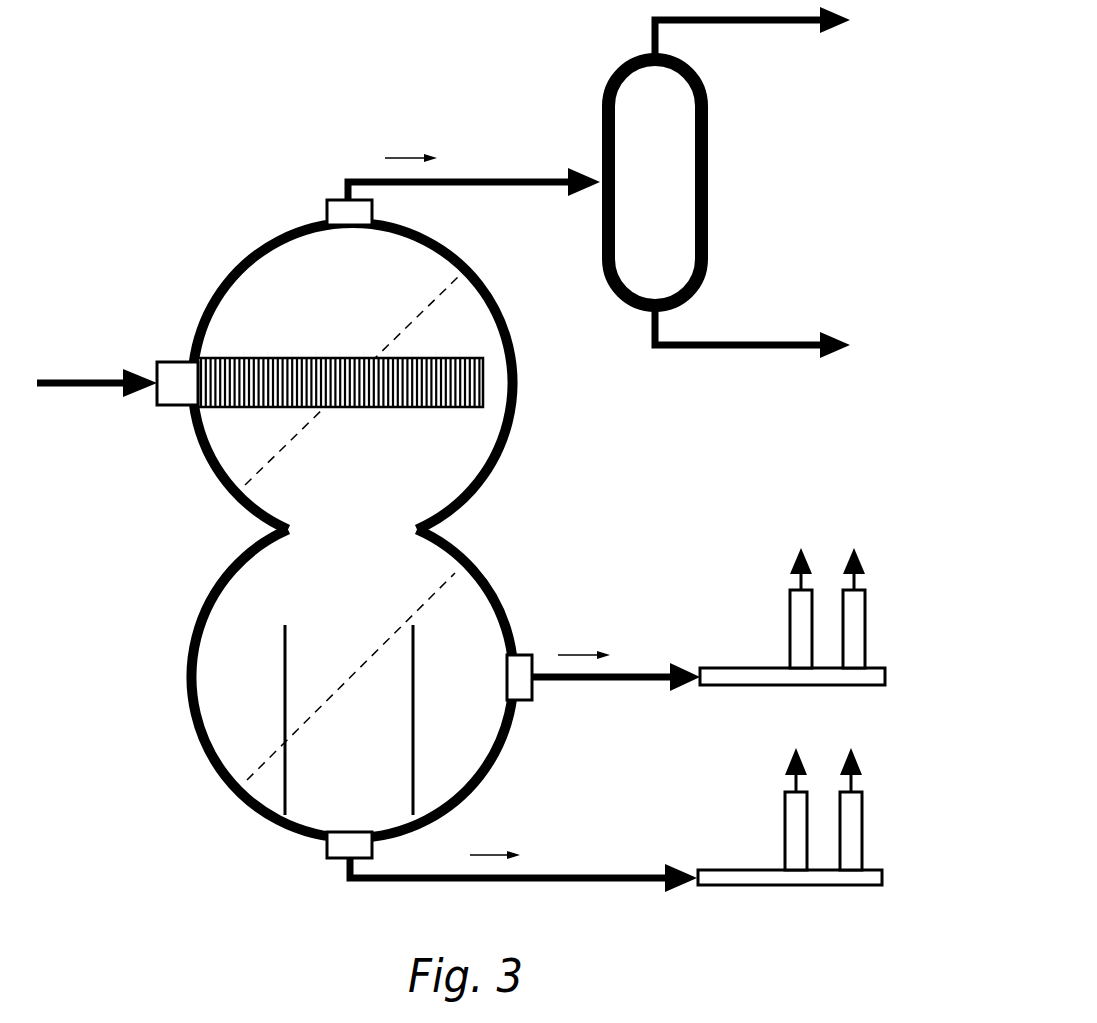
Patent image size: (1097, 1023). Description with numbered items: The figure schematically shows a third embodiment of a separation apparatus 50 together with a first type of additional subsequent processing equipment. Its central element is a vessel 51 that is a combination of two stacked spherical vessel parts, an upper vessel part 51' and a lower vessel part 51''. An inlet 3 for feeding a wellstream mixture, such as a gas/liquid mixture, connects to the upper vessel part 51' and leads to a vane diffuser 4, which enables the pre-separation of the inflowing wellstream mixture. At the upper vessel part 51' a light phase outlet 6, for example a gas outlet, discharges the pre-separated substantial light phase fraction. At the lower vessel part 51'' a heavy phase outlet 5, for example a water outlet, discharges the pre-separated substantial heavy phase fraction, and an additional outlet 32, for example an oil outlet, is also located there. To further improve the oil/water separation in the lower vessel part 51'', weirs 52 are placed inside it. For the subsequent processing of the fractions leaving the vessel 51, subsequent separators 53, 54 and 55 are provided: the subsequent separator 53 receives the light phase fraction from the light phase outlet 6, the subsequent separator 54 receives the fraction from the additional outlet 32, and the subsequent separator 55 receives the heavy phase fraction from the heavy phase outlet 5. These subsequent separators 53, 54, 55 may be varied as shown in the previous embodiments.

The separation apparatus 50 is at (127, 142).
The vessel 51 is at (346, 530).
The upper vessel part 51' is at (320, 376).
The lower vessel part 51'' is at (321, 684).
The weirs 52 is at (285, 692).
The inlet 3 is at (176, 362).
The vane diffuser 4 is at (346, 360).
The heavy phase outlet 5 is at (327, 853).
The light phase outlet 6 is at (327, 207).
The additional outlet 32 is at (520, 700).
The subsequent separator 53 is at (588, 48).
The subsequent separator 54 is at (735, 655).
The subsequent separator 55 is at (735, 857).